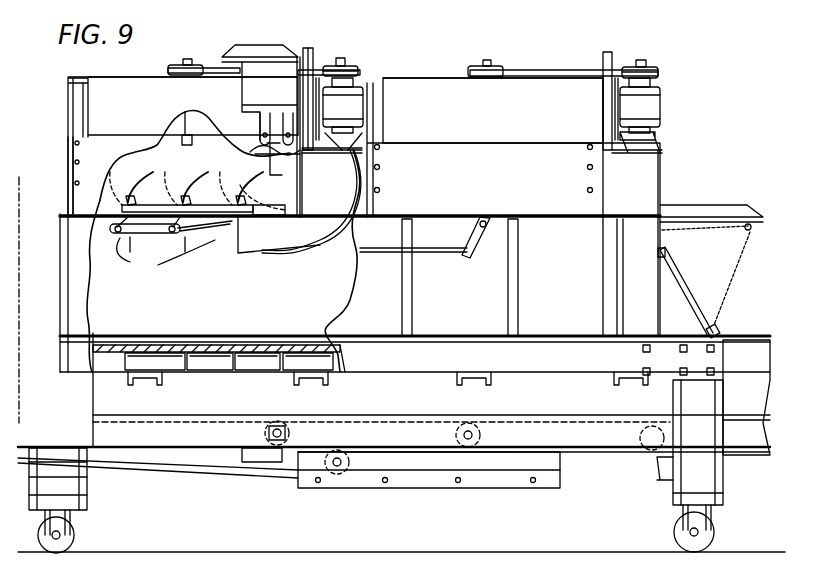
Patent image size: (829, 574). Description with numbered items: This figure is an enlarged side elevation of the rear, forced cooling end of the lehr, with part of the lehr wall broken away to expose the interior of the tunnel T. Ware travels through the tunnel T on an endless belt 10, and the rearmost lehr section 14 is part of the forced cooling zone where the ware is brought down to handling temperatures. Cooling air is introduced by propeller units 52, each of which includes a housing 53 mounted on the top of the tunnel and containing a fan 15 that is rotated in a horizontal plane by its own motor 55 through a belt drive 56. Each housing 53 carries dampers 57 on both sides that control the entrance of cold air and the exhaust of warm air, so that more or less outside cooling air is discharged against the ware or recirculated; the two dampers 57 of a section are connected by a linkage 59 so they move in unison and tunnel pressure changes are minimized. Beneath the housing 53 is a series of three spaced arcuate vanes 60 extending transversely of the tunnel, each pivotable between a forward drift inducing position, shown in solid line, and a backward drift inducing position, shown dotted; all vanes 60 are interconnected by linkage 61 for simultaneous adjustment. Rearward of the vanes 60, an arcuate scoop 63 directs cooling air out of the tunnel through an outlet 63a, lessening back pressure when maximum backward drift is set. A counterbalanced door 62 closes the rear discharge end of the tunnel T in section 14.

The endless belt 10 is at (255, 345).
The lehr section 14 is at (668, 122).
The fan 15 is at (180, 142).
The propeller unit 52 is at (205, 52).
The housing 53 is at (68, 156).
The motor 55 is at (358, 92).
The belt drive 56 is at (305, 72).
The damper 57 is at (100, 107).
The linkage 59 is at (305, 48).
The arcuate vane 60 is at (235, 247).
The linkage 61 is at (379, 261).
The counterbalanced door 62 is at (678, 290).
The arcuate scoop 63 is at (250, 252).
The outlet 63a is at (340, 153).
The tunnel T is at (205, 311).